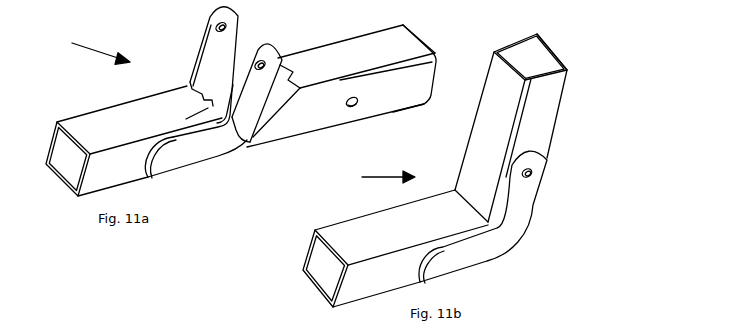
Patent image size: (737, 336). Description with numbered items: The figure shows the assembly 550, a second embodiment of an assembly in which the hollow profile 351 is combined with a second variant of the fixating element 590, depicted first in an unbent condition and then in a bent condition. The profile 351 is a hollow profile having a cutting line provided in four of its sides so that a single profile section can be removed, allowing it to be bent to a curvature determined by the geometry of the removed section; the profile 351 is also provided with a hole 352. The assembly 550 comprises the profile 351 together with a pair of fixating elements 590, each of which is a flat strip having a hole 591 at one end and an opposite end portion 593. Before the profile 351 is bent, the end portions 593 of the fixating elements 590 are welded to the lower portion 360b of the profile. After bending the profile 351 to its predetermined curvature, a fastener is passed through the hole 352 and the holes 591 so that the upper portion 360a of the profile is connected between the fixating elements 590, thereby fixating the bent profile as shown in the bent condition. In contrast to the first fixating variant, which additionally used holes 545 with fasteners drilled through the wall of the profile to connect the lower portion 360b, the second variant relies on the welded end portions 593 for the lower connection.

In FIG. 11A, the upper portion 360a is at (413, 42).
In FIG. 11B, the upper portion 360a is at (490, 118).
In FIG. 11A, the lower portion 360b is at (92, 110).
In FIG. 11B, the lower portion 360b is at (363, 233).
In FIG. 11A, the hole 545 is at (368, 57).
In FIG. 11A, the profile 351 is at (318, 65).
In FIG. 11B, the profile 351 is at (541, 62).
In FIG. 11A, the hole 352 is at (360, 107).
In FIG. 11A, the assembly 550 is at (80, 47).
In FIG. 11B, the assembly 550 is at (371, 174).
In FIG. 11A, the fixating element 590 is at (207, 63).
In FIG. 11B, the fixating element 590 is at (517, 218).
In FIG. 11A, the hole 591 is at (216, 25).
In FIG. 11B, the hole 591 is at (543, 160).
In FIG. 11A, the end portion 593 is at (173, 162).